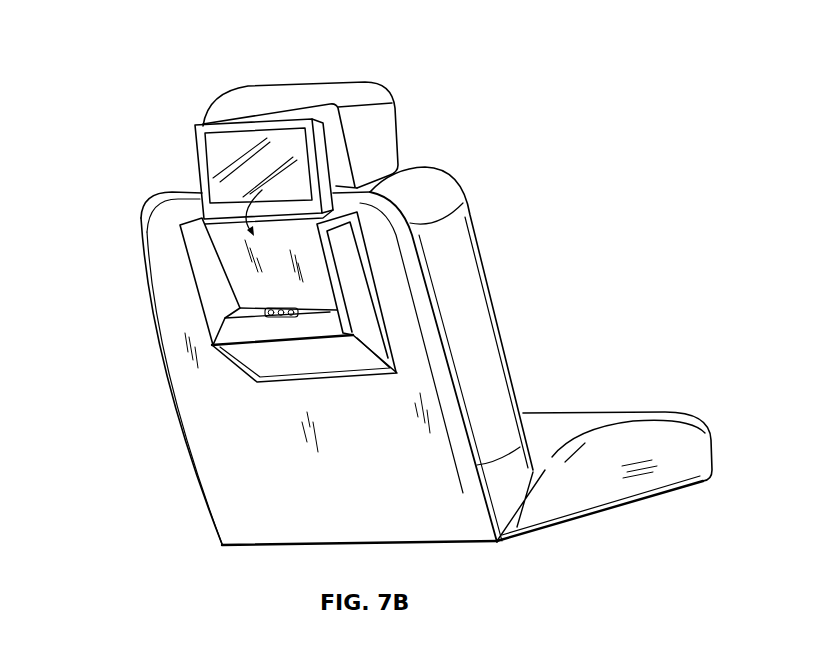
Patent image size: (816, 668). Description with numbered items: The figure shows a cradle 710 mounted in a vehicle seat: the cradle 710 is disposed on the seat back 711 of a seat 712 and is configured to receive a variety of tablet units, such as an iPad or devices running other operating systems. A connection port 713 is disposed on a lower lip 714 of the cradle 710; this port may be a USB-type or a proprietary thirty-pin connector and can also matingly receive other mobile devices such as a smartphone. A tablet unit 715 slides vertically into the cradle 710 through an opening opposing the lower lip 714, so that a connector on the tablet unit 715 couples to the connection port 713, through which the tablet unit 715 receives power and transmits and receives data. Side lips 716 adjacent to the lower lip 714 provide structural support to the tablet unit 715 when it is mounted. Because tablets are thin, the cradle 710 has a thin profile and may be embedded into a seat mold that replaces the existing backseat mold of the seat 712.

The cradle 710 is at (230, 355).
The seat back 711 is at (250, 478).
The seat 712 is at (462, 82).
The connection port 713 is at (395, 365).
The lower lip 714 is at (248, 310).
The tablet unit 715 is at (194, 131).
The side lips 716 is at (212, 247).